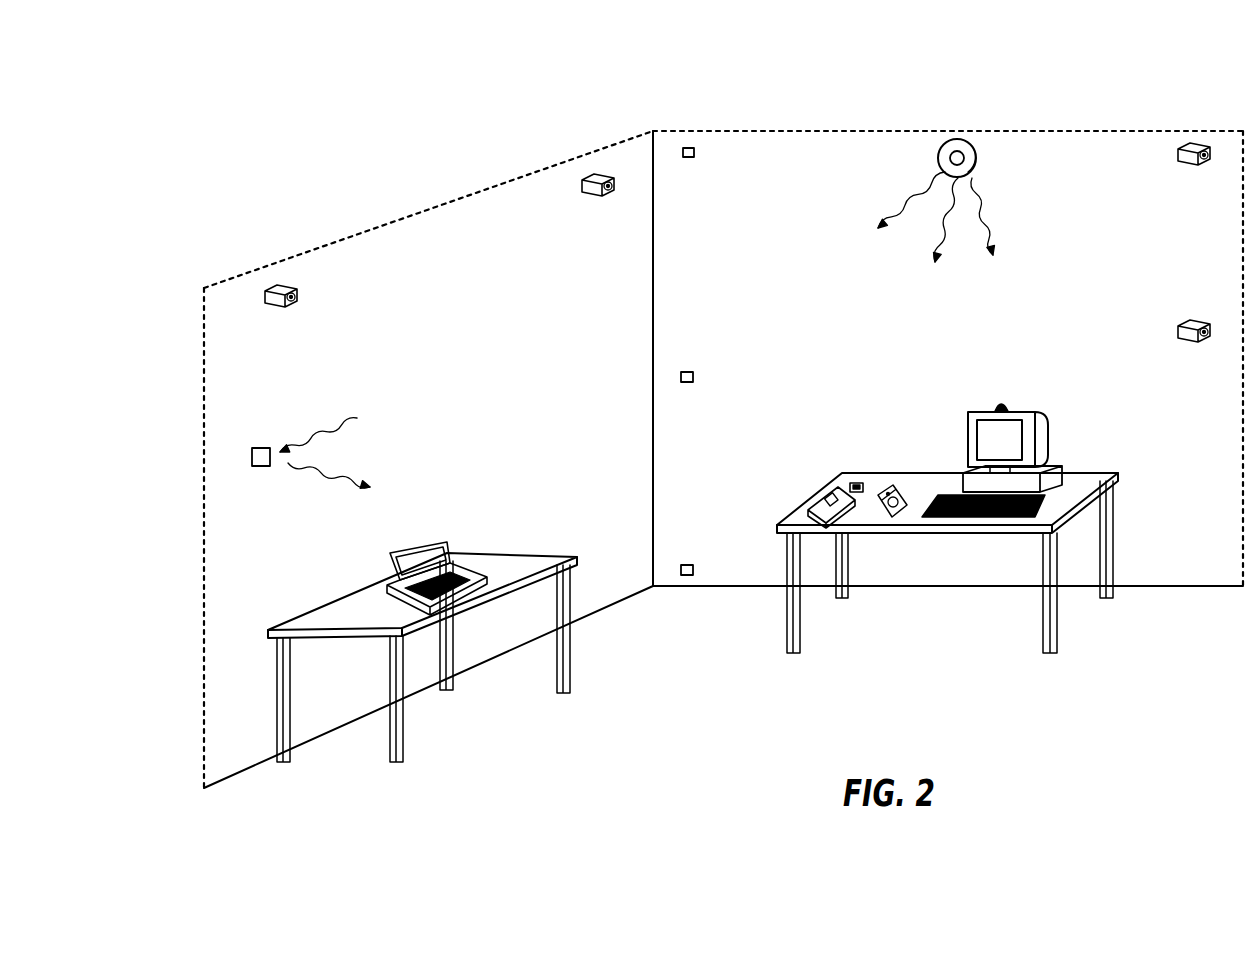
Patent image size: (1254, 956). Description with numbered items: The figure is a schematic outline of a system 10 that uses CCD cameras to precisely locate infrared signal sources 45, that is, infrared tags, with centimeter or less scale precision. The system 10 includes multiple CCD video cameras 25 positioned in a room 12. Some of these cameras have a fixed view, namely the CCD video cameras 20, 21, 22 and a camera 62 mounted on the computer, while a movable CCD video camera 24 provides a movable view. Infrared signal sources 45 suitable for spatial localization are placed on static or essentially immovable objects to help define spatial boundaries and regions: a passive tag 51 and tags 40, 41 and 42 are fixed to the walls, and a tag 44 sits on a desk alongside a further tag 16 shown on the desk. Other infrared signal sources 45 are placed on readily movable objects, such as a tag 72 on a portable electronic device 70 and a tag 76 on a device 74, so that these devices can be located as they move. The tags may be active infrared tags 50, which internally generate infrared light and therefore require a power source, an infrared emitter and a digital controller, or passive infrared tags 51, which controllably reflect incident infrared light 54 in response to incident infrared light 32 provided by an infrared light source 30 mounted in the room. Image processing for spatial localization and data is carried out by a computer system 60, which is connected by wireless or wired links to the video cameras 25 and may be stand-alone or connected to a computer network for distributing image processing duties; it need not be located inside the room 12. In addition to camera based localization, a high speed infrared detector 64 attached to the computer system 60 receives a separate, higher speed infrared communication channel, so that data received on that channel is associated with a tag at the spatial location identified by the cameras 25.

The system 10 is at (400, 124).
The room 12 is at (370, 255).
The tag/badge 16 is at (880, 487).
The CCD video camera 20 is at (1200, 144).
The CCD video camera 21 is at (1188, 325).
The CCD video camera 22 is at (587, 186).
The movable CCD video camera 24 is at (270, 290).
The CCD video cameras 25 is at (576, 148).
The infrared light source 30 is at (967, 139).
The incident infrared light 32 is at (984, 204).
The tag 40 is at (694, 151).
The tag 41 is at (693, 373).
The tag 42 is at (693, 566).
The tag 44 is at (853, 483).
The infrared signal sources 45 is at (772, 152).
The active infrared tags 50 is at (588, 527).
The passive infrared tags 51 is at (260, 448).
The reflected infrared light 54 is at (342, 472).
The computer system 60 is at (1010, 442).
The CCD video camera 62 is at (1003, 401).
The high speed infrared detector 64 is at (1045, 465).
The portable electronic device 70 is at (800, 500).
The tag 72 is at (830, 493).
The device 74 is at (418, 546).
The tag 76 is at (458, 580).